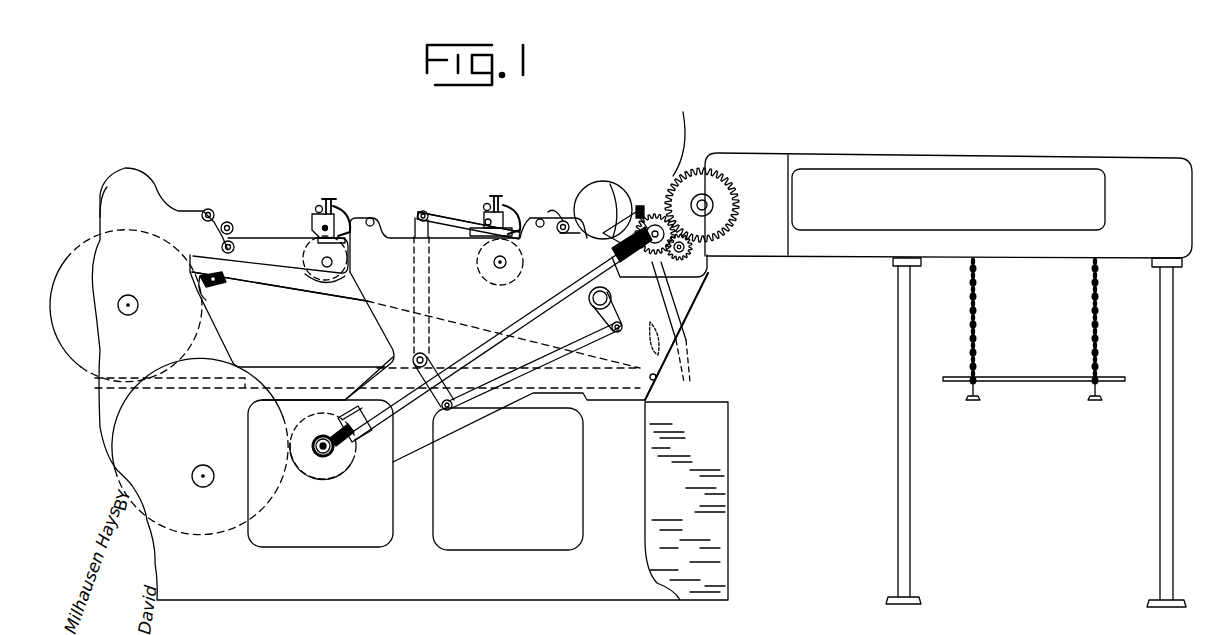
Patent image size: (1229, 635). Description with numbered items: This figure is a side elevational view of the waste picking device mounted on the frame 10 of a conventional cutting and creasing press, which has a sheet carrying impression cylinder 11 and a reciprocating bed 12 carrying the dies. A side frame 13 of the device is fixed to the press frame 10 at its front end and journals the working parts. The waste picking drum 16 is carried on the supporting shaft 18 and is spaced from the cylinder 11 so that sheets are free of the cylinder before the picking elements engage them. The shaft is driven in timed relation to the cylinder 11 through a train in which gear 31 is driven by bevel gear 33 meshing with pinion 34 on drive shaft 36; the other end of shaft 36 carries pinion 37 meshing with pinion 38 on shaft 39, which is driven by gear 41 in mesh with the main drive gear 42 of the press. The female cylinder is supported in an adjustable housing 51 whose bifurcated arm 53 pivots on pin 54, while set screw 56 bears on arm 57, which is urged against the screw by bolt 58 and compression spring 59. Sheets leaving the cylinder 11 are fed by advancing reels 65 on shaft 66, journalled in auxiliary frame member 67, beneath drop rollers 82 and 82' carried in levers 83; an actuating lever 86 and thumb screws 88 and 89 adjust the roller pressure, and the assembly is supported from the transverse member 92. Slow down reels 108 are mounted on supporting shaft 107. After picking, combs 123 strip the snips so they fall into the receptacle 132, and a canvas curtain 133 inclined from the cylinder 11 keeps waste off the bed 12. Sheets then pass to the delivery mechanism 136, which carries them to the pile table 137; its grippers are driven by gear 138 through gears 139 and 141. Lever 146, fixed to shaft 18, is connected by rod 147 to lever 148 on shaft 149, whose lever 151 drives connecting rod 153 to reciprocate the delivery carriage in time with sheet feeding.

The frame 10 is at (370, 588).
The sheet carrying impression cylinder 11 is at (80, 242).
The reciprocating bed 12 is at (228, 364).
The side frame 13 is at (386, 250).
The waste picking drum 16 is at (690, 293).
The supporting shaft 18 is at (590, 300).
The gear 31 is at (677, 136).
The bevel gear 33 is at (672, 303).
The pinion 34 is at (660, 327).
The drive shaft 36 is at (518, 324).
The pinion 37 is at (348, 447).
The pinion 38 is at (328, 460).
The shaft 39 is at (310, 447).
The gear 41 is at (344, 466).
The main drive gear 42 is at (278, 513).
The adjustable housing 51 is at (590, 190).
The bifurcated arm 53 is at (563, 220).
The pin 54 is at (558, 220).
The set screw 56 is at (606, 195).
The arm 57 is at (641, 206).
The bolt 58 is at (671, 233).
The compression spring 59 is at (644, 210).
The advancing reel 65 is at (313, 281).
The shaft 66 is at (322, 260).
The auxiliary frame member 67 is at (245, 243).
The drop roller 82 is at (308, 225).
The plate 82' is at (471, 245).
The lever 83 is at (318, 216).
The actuating lever 86 is at (336, 212).
The thumb screw 88 is at (327, 198).
The thumb screw 89 is at (317, 207).
The transverse member 92 is at (370, 218).
The supporting shaft 107 is at (502, 270).
The sheet slow down reel 108 is at (483, 279).
The comb 123 is at (683, 377).
The receptacle 132 is at (718, 428).
The canvas curtain 133 is at (338, 300).
The delivery mechanism 136 is at (775, 248).
The pile table 137 is at (1037, 383).
The gear 138 is at (692, 172).
The gear 139 is at (670, 290).
The gear 141 is at (698, 260).
The lever 146 is at (614, 305).
The rod 147 is at (547, 364).
The lever 148 is at (437, 399).
The shaft 149 is at (426, 355).
The lever 151 is at (422, 215).
The connecting rod 153 is at (449, 218).